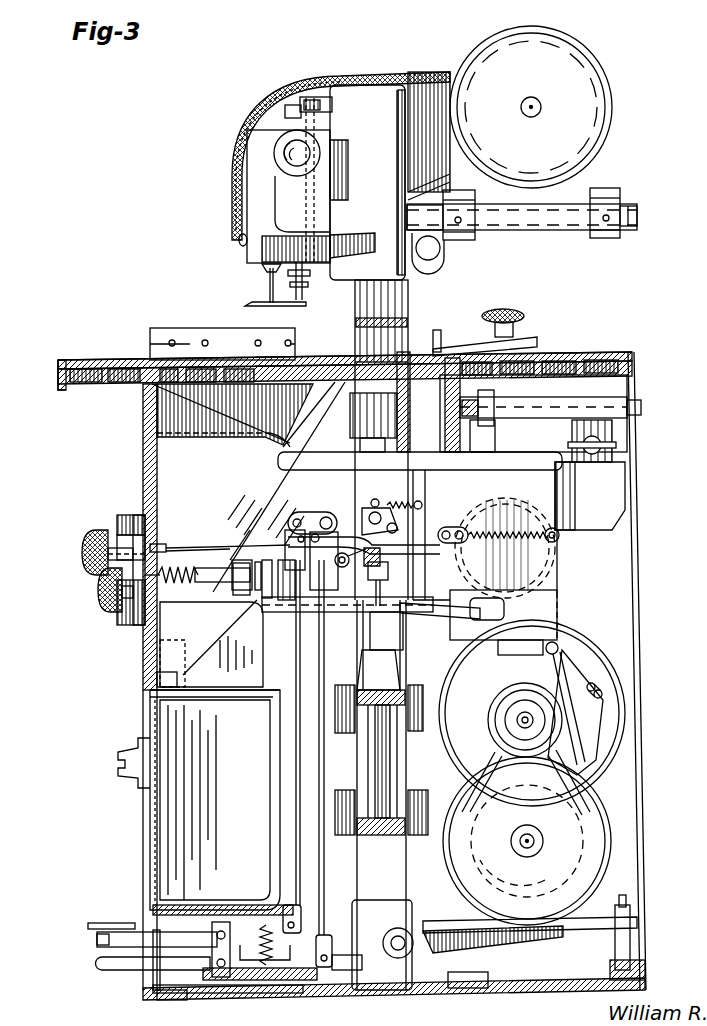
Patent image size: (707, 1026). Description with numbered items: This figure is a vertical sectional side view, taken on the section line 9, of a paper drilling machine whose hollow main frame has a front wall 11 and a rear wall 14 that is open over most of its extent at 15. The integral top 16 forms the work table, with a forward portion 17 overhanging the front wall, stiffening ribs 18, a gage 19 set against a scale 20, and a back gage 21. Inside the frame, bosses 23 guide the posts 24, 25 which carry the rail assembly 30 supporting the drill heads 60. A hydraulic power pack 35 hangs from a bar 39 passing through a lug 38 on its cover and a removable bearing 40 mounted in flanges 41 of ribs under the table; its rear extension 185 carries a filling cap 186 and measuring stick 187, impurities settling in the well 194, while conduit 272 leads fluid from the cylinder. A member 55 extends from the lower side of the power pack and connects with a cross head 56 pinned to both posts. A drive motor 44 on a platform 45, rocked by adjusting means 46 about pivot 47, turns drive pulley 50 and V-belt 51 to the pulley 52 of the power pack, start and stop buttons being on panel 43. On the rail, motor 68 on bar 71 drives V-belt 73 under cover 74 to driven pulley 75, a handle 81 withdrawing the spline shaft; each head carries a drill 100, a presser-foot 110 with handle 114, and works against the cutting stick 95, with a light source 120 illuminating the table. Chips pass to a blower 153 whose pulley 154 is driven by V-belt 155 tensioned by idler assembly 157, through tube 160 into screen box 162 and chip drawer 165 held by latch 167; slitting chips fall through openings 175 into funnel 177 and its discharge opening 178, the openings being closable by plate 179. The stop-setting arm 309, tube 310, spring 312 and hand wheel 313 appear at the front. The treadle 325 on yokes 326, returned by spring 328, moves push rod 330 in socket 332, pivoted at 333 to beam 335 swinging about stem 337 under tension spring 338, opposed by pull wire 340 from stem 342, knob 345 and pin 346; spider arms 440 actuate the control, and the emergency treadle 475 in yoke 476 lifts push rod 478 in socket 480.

The section line 9- 9 is at (330, 64).
The front wall 11 is at (148, 429).
The rear wall 14 is at (634, 374).
The rear wall opening 15 is at (641, 558).
The top 16 is at (83, 360).
The forward portion 17 is at (60, 384).
The ribs 18 is at (572, 360).
The gage 19 is at (176, 332).
The scale 20 is at (245, 358).
The back gage 21 is at (528, 338).
The bosses 23 is at (348, 978).
The guide post 24 is at (388, 338).
The guide post 25 is at (392, 296).
The rail assembly 30 is at (380, 92).
The power pack 35 is at (564, 577).
The upstanding lug 38 is at (376, 440).
The bar 39 is at (643, 406).
The bearing 40 is at (398, 372).
The elongated flanges 41 is at (458, 398).
The panel 43 is at (125, 520).
The drive motor 44 is at (605, 837).
The platform 45 is at (639, 923).
The adjusting means 46 is at (633, 953).
The pivot 47 is at (402, 958).
The drive pulley 50 is at (580, 860).
The V-belt 51 is at (565, 652).
The pulley 52 is at (559, 548).
The clutch member 55 is at (372, 638).
The cross head 56 is at (419, 836).
The drill head 60 is at (244, 212).
The drive motor 68 is at (612, 74).
The bar 71 is at (556, 222).
The V-belt 73 is at (428, 74).
The cover 74 is at (330, 76).
The driven pulley 75 is at (250, 110).
The handle portion 81 is at (290, 154).
The cutting stick 95 is at (295, 308).
The drill 100 is at (300, 290).
The presser-foot 110 is at (268, 298).
The handle 114 is at (238, 240).
The light source 120 is at (438, 250).
The blower 153 is at (604, 658).
The drive pulley 154 is at (513, 700).
The V-belt 155 is at (592, 776).
The belt tightener and idler pulley assembly 157 is at (596, 711).
The tube 160 is at (273, 680).
The screen box 162 is at (172, 681).
The chip drawer 165 is at (160, 838).
The latch means 167 is at (127, 757).
The openings 175 is at (313, 386).
The funnel 177 is at (165, 469).
The discharge opening 178 is at (168, 656).
The plate 179 is at (356, 310).
The extension 185 is at (617, 493).
The filling cap 186 is at (613, 434).
The liquid measuring stick 187 is at (613, 457).
The well 194 is at (548, 610).
The conduit 272 is at (445, 624).
The arm 309 is at (233, 572).
The actuating tube 310 is at (203, 590).
The spring 312 is at (124, 617).
The hand wheel 313 is at (100, 596).
The main actuating treadle 325 is at (108, 970).
The yokes 326 is at (215, 986).
The compression spring 328 is at (257, 974).
The push rod 330 is at (318, 840).
The socket 332 is at (298, 578).
The pivot 333 is at (320, 512).
The beam 335 is at (337, 537).
The stem 337 is at (463, 541).
The tension spring 338 is at (470, 533).
The pull wire 340 is at (198, 550).
The stem 342 is at (162, 547).
The control knob 345 is at (86, 553).
The pin 346 is at (86, 538).
The arms 440 is at (371, 569).
The emergency treadle 475 is at (105, 924).
The yoke 476 is at (223, 918).
The push rod 478 is at (294, 788).
The socket 480 is at (286, 537).